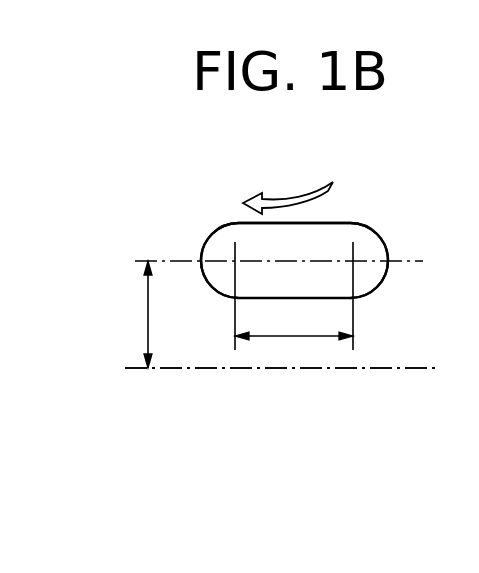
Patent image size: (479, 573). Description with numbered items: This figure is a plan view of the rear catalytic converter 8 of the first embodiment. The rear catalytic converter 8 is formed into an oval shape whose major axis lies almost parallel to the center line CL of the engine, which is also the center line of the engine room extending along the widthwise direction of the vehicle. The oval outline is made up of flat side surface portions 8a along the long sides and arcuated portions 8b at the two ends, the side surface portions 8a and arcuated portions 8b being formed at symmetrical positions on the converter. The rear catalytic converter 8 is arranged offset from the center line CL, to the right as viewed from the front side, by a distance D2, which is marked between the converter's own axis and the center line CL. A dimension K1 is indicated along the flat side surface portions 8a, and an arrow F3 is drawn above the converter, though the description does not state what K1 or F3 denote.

The rear catalytic converter 8 is at (324, 297).
The side surface portions 8a is at (364, 226).
The arcuated portions 8b is at (207, 247).
The distance D2 is at (148, 317).
The length K1 of flat portion K1 is at (299, 337).
The center line CL is at (186, 372).
The force / rotation direction F3 is at (289, 203).